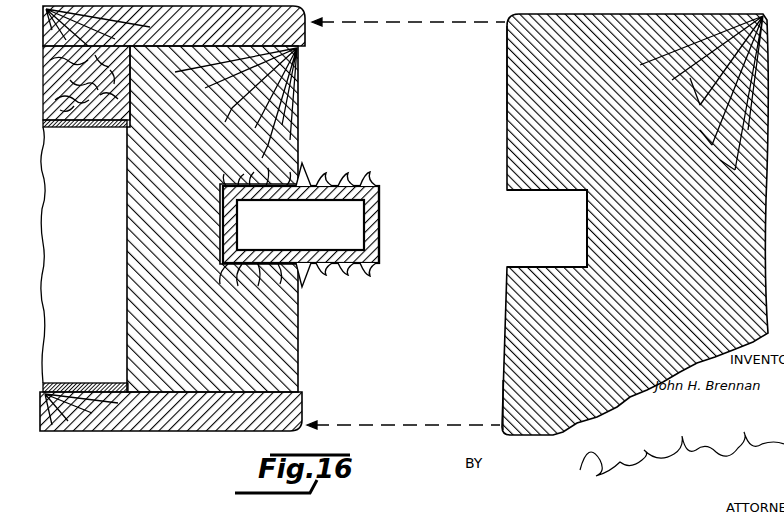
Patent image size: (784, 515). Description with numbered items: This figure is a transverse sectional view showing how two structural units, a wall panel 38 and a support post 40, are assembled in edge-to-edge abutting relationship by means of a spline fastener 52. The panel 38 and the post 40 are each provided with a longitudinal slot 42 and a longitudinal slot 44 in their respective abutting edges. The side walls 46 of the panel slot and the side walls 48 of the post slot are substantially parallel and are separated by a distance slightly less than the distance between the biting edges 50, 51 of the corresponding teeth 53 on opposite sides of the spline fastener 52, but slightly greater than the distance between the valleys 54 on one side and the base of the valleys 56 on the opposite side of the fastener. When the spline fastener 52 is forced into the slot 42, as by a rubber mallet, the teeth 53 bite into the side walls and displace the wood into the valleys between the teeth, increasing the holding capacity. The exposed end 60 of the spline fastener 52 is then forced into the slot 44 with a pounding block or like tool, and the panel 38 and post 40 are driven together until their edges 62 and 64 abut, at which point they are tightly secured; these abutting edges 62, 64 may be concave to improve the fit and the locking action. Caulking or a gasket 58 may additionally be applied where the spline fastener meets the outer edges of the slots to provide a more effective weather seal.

The wall panel 38 is at (299, 70).
The post 40 is at (508, 78).
The longitudinal slot 42 is at (220, 220).
The longitudinal slot 44 is at (588, 206).
The side walls 46 is at (224, 184).
The side walls 48 is at (550, 188).
The biting edge 50 is at (266, 182).
The biting edge 51 is at (258, 288).
The spline fastener 52 is at (372, 183).
The teeth 53 is at (240, 176).
The valleys 54 is at (252, 182).
The valleys 56 is at (240, 288).
The caulking or gasket 58 is at (304, 177).
The exposed end 60 is at (381, 218).
The abutting edge 62 is at (303, 38).
The abutting edge 64 is at (506, 40).